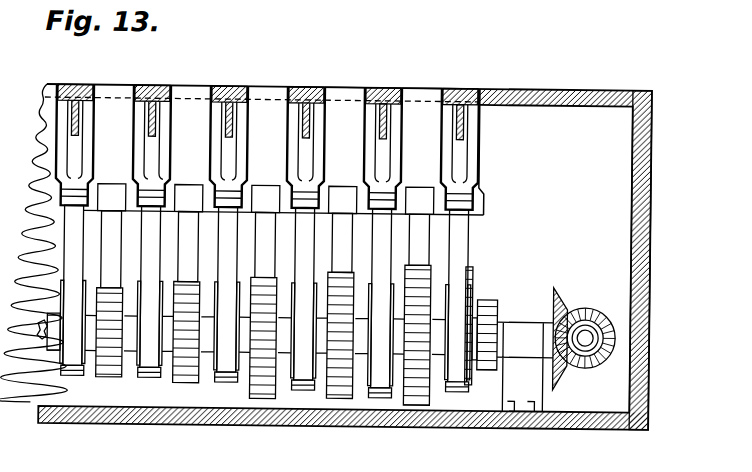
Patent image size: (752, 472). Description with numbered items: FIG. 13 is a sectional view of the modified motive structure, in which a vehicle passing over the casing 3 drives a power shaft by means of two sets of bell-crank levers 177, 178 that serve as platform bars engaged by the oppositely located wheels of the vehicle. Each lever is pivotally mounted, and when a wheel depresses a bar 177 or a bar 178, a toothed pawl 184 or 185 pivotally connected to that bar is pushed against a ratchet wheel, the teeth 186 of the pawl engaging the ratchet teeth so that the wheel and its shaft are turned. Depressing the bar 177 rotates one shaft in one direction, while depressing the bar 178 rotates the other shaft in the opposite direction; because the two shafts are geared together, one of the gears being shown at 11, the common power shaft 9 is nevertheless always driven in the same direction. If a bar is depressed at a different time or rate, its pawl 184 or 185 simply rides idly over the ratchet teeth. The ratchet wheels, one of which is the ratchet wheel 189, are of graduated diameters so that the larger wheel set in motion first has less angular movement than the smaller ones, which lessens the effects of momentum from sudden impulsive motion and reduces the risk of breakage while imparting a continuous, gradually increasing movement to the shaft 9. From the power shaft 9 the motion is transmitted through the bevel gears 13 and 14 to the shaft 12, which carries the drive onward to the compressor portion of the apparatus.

The casing 3 is at (644, 237).
The power shaft 9 is at (44, 326).
The spur gear 11 is at (497, 300).
The shaft 12 is at (588, 332).
The bevel gear 13 is at (562, 284).
The bevel gear 14 is at (590, 304).
The bell-crank lever 177 is at (336, 95).
The bell-crank lever 178 is at (377, 89).
The toothed pawl 184 is at (344, 230).
The toothed pawl 185 is at (382, 229).
The teeth 186 is at (347, 384).
The ratchet wheel 189 is at (472, 274).